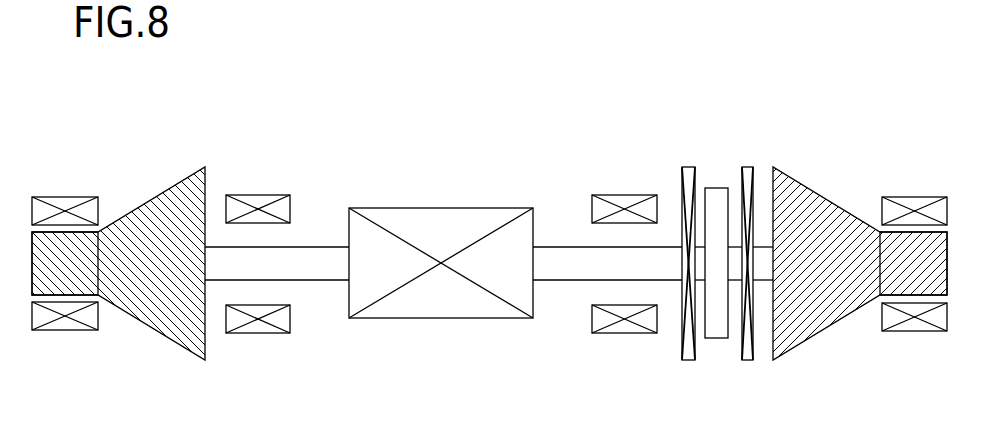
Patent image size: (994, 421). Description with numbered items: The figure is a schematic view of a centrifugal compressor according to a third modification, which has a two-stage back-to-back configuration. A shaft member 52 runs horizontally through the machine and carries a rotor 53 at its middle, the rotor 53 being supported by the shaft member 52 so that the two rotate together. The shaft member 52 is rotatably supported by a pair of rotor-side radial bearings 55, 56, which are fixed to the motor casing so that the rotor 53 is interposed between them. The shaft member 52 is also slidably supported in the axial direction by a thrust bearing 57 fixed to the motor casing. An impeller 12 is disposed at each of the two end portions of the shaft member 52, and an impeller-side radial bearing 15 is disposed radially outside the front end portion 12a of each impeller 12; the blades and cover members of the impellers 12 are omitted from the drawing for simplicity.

The impeller 12 is at (163, 190).
The front end portion 12a is at (45, 262).
The impeller-side radial bearing 15 is at (90, 197).
The shaft member 52 is at (563, 247).
The rotor 53 is at (450, 208).
The rotor-side radial bearing 55 is at (262, 195).
The rotor-side radial bearing 56 is at (627, 195).
The thrust bearing 57 is at (760, 162).